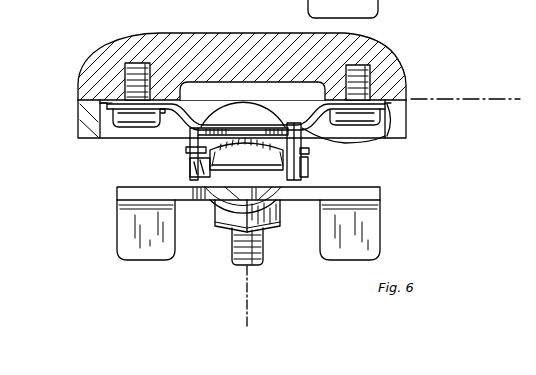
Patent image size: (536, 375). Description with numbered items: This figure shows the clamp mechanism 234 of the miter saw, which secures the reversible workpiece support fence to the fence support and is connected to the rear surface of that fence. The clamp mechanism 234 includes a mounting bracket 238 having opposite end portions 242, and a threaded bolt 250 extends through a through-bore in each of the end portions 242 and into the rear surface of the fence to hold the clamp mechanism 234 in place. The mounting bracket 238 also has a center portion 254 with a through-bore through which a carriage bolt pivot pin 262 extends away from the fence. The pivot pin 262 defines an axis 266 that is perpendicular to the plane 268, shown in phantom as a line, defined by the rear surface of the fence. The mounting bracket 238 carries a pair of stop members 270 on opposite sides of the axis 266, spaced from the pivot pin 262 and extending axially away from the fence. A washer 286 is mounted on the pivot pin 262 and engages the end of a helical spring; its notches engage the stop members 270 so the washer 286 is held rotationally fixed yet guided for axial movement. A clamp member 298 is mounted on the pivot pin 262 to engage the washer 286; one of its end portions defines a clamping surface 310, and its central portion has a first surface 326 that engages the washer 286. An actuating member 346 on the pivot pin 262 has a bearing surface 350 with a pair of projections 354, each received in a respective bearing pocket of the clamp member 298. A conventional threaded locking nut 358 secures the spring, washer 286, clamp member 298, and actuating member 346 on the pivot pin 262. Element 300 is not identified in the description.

The clamp mechanism 234 is at (246, 167).
The mounting bracket 238 is at (200, 110).
The end portions 242 is at (78, 107).
The threaded bolt 250 is at (78, 130).
The center portion 254 is at (310, 141).
The carriage bolt pivot pin 262 is at (232, 259).
The axis 266 is at (245, 293).
The plane 268 is at (497, 98).
The stop members 270 is at (186, 150).
The washer 286 is at (308, 160).
The clamp member 298 is at (190, 167).
The upper housing 300 is at (378, 4).
The clamping surface 310 is at (242, 200).
The first surface 326 is at (197, 127).
The actuating member 346 is at (117, 205).
The bearing surface 350 is at (122, 187).
The projections 354 is at (232, 202).
The threaded locking nut 358 is at (280, 222).